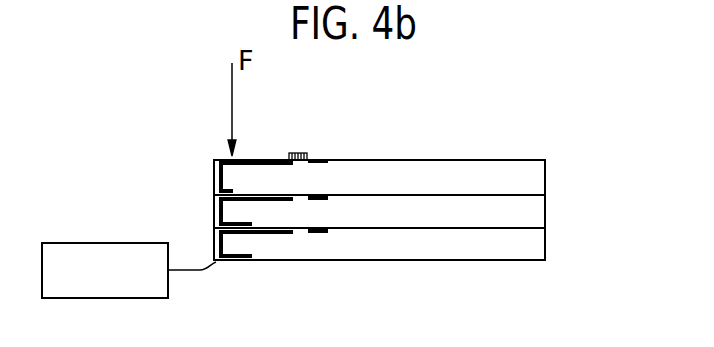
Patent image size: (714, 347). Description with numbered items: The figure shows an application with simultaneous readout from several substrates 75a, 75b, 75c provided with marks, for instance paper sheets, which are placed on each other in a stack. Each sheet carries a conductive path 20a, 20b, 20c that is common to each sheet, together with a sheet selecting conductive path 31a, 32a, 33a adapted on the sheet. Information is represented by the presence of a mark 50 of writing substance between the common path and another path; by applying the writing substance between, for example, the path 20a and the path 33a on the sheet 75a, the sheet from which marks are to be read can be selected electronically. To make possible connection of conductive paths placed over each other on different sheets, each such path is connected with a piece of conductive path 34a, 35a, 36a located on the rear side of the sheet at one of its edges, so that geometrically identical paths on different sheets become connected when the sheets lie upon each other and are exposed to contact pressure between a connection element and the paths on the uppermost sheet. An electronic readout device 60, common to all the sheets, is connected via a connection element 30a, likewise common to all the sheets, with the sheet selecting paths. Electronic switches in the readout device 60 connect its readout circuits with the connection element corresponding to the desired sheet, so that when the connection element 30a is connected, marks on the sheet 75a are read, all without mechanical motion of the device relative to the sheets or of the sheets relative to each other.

The common conductive path 20a is at (322, 164).
The common conductive path 20b is at (322, 200).
The common conductive path 20c is at (322, 233).
The connection element 30a is at (201, 273).
The sheet selecting conductive path 31a is at (283, 235).
The sheet selecting conductive path 32a is at (249, 193).
The sheet selecting conductive path 33a is at (242, 158).
The piece of conductive path 34a is at (247, 258).
The piece of conductive path 35a is at (236, 224).
The piece of conductive path 36a is at (234, 190).
The mark of writing substance 50 is at (305, 153).
The electronic readout device 60 is at (88, 287).
The substrate 75a is at (538, 178).
The substrate 75b is at (538, 213).
The substrate 75c is at (538, 247).